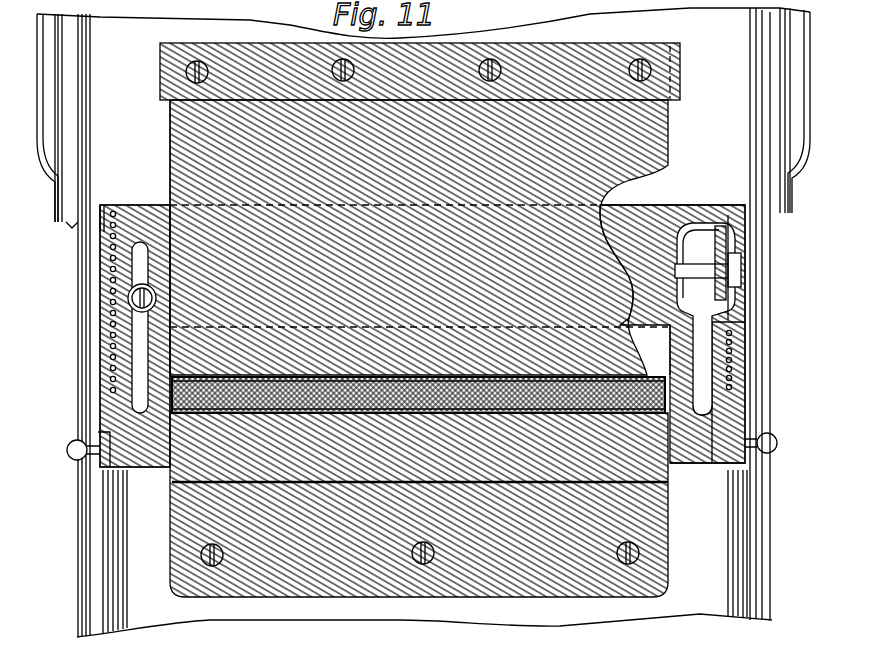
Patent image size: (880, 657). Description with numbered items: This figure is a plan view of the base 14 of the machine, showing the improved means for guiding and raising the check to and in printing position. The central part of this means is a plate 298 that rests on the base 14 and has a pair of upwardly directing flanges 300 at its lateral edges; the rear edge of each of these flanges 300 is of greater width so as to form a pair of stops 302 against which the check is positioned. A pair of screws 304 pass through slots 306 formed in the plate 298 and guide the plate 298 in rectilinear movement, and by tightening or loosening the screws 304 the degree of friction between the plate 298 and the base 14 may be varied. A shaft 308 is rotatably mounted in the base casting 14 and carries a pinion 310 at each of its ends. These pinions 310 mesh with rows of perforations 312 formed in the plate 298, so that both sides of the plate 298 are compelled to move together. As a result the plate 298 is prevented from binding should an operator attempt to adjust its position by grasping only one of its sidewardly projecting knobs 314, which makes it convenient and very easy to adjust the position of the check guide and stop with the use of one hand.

The base 14 is at (753, 538).
The plate 298 is at (153, 214).
The upwardly directing flanges 300 is at (100, 275).
The stops 302 is at (103, 207).
The screws 304 is at (151, 294).
The slots 306 is at (143, 243).
The shaft 308 is at (727, 247).
The pinion 310 is at (700, 268).
The rows of perforations 312 is at (111, 348).
The sidewardly projecting knobs 314 is at (70, 458).